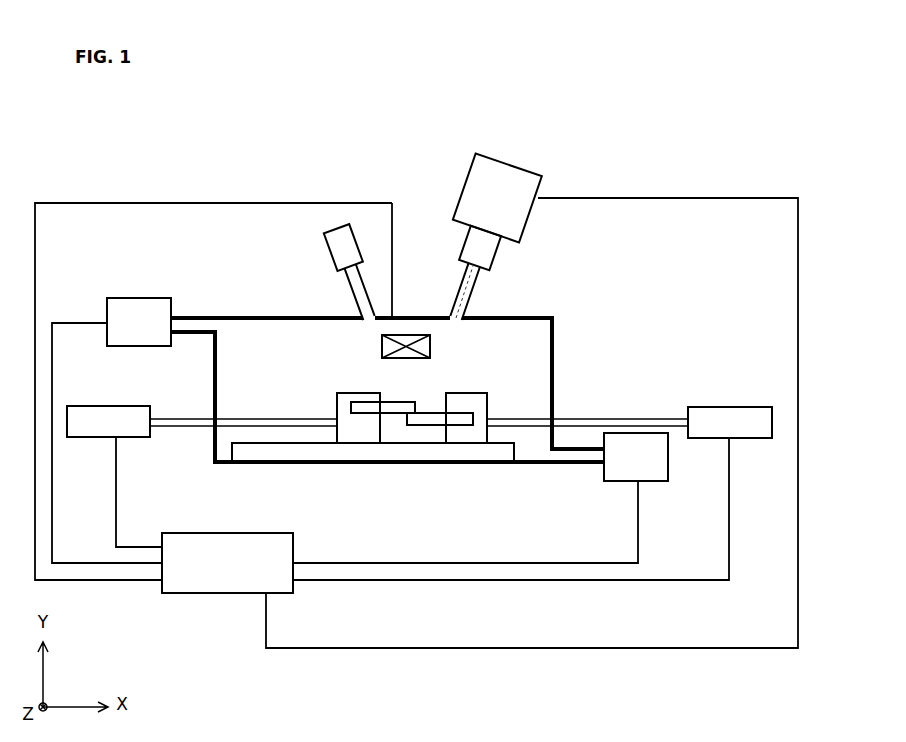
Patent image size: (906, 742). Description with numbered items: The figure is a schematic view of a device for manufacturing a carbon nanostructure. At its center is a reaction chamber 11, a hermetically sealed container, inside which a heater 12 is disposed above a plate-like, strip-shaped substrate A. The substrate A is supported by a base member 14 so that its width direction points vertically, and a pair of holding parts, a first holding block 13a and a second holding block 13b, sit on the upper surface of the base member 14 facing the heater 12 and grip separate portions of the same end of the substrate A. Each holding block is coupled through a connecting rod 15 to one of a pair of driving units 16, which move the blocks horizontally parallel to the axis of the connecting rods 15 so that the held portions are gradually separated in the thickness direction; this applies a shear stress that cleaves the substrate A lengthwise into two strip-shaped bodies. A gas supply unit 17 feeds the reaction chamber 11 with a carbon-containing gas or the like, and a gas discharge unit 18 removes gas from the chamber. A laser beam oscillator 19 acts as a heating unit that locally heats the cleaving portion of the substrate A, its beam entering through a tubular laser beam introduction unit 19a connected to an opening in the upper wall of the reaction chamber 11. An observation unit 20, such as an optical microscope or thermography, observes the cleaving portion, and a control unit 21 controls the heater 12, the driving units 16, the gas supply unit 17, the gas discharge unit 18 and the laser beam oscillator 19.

The reaction chamber 11 is at (530, 318).
The heater 12 is at (381, 346).
The first holding block 13a is at (468, 392).
The second holding block 13b is at (351, 392).
The base member 14 is at (500, 457).
The connecting rods 15 is at (173, 429).
The driving units 16 is at (90, 432).
The gas supply unit 17 is at (138, 303).
The gas discharge unit 18 is at (657, 479).
The laser beam oscillator 19 is at (511, 172).
The laser beam introduction unit 19a is at (453, 300).
The observation unit 20 is at (323, 236).
The control unit 21 is at (210, 598).
The substrate A is at (425, 418).